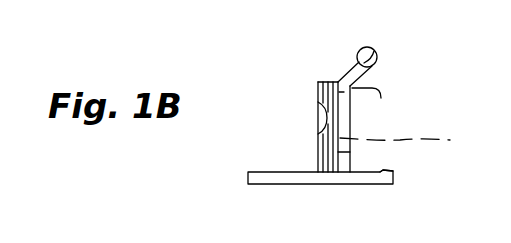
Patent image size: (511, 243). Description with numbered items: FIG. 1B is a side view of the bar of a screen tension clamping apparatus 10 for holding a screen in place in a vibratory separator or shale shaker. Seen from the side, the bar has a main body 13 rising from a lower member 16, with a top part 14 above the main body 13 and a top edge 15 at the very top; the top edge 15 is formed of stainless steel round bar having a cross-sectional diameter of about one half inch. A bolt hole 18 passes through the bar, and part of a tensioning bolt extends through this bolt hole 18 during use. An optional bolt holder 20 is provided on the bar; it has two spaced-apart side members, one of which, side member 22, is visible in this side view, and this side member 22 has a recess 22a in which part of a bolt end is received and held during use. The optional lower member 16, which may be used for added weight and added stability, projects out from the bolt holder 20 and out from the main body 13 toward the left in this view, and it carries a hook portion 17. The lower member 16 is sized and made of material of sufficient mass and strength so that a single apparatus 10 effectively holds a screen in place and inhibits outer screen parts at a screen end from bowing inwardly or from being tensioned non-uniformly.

The screen tension clamping apparatus 10 is at (313, 66).
The main body 13 is at (381, 98).
The top part 14 is at (372, 72).
The top edge 15 is at (376, 51).
The lower member 16 is at (303, 182).
The hook portion 17 is at (383, 170).
The bolt hole 18 is at (410, 140).
The bolt holder 20 is at (318, 161).
The side member 22 is at (317, 99).
The recess 22a is at (317, 118).